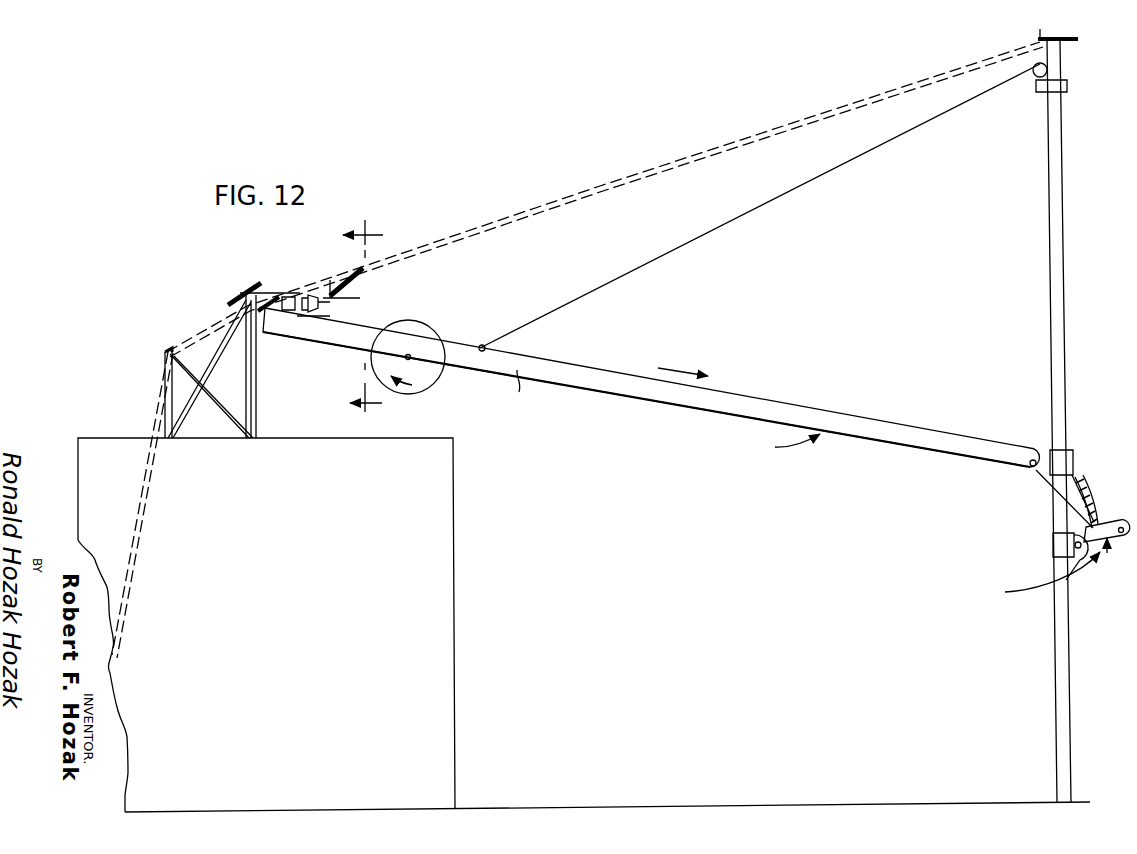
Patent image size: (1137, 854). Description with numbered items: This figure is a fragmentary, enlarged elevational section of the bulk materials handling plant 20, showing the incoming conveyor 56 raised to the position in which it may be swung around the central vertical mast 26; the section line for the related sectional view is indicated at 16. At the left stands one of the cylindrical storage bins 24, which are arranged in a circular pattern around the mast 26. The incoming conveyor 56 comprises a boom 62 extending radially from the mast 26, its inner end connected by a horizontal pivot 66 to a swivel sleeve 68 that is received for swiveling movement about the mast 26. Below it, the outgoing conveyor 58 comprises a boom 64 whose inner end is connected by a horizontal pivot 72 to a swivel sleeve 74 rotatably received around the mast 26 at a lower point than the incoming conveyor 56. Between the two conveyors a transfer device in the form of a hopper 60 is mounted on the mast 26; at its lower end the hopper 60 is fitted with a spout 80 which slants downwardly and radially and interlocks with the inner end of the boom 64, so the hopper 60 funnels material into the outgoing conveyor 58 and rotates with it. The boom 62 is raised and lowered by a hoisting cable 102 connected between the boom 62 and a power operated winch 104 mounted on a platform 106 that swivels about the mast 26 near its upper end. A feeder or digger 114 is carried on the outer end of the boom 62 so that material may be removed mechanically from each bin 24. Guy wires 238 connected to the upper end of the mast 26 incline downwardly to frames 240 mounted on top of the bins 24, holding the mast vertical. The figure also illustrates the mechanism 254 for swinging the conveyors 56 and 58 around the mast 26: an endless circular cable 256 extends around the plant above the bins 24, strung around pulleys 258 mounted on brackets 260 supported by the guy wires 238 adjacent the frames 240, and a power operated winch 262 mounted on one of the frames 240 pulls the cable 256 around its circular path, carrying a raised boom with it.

The section line 16- 16 is at (345, 317).
The bulk materials handling plant 20 is at (70, 285).
The storage bins 24 is at (453, 547).
The central vertical mast 26 is at (1058, 242).
The incoming conveyor 56 is at (788, 402).
The outgoing conveyor 58 is at (1117, 566).
The transfer hopper 60 is at (1046, 492).
The incoming conveyor boom 62 is at (510, 389).
The outgoing conveyor boom 64 is at (1115, 520).
The horizontal pivot 66 is at (1026, 470).
The swivel sleeve 68 is at (1075, 452).
The horizontal pivot 72 is at (1072, 562).
The swivel sleeve 74 is at (1051, 546).
The spout 80 is at (1089, 498).
The hoisting cable 102 is at (690, 244).
The power operated winch 104 is at (1035, 74).
The platform 106 is at (1040, 88).
The feeder or digger 114 is at (434, 390).
The guy wires 238 is at (548, 208).
The frames 240 is at (253, 392).
The swinging mechanism 254 is at (385, 292).
The endless circular cable 256 is at (336, 306).
The pulleys 258 is at (322, 313).
The brackets 260 is at (327, 284).
The power operated winch 262 is at (295, 312).